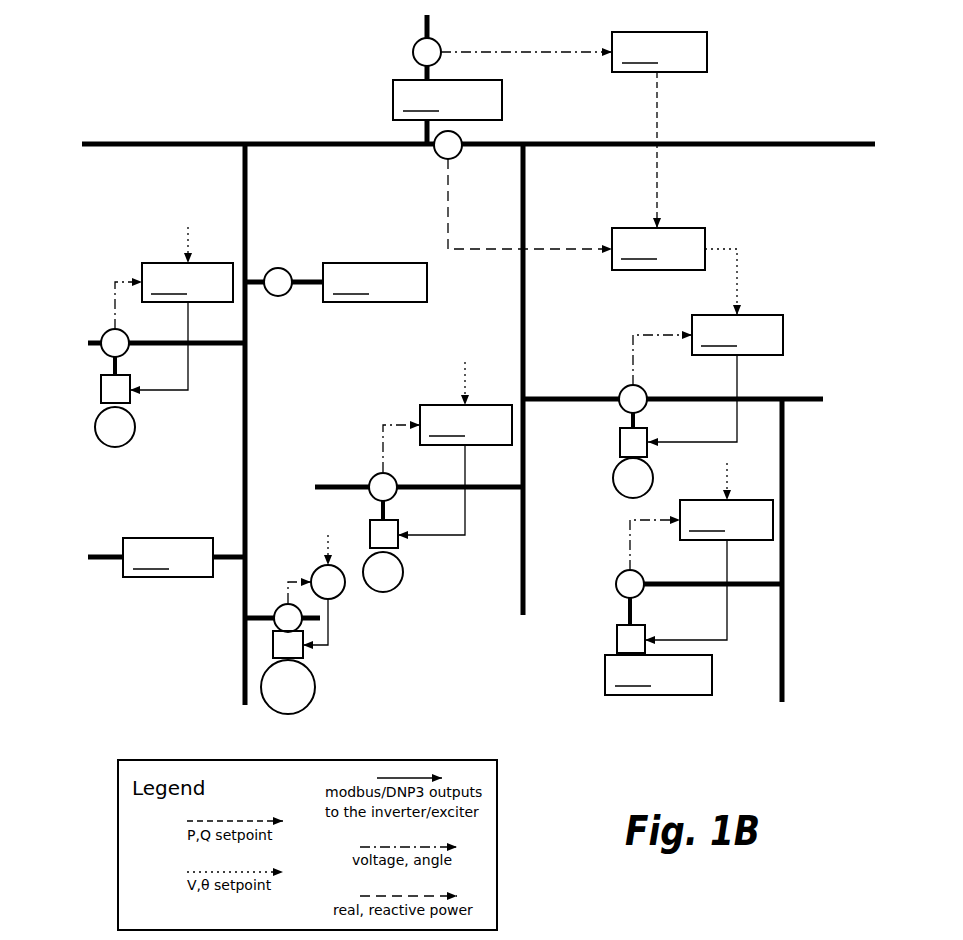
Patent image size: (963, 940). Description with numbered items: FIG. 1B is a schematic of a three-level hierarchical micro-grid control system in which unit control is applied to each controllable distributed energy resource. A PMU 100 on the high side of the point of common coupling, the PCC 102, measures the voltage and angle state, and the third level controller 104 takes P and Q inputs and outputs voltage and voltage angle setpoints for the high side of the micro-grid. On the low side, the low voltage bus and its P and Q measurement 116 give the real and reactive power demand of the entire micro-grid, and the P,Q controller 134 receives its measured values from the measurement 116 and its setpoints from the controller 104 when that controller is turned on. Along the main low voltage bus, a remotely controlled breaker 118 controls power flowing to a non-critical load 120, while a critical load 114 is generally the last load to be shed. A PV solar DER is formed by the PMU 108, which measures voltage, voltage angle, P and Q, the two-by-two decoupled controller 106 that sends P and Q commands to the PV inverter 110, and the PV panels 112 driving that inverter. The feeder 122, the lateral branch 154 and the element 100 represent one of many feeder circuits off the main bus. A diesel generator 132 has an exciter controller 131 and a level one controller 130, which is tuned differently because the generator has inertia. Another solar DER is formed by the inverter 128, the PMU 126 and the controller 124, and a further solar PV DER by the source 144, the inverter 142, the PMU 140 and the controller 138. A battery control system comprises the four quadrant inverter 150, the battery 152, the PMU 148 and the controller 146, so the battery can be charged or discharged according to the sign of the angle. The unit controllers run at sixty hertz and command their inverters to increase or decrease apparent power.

The PMU 100 is at (413, 47).
The point of common coupling (PCC) 102 is at (447, 100).
The third level controller 104 is at (659, 130).
The voltage and voltage angle decoupled controller 106 is at (174, 308).
The PMU 108 is at (102, 335).
The PV inverter 110 is at (101, 390).
The PV panels 112 is at (96, 420).
The critical load 114 is at (166, 557).
The low voltage bus measurement 116 is at (366, 160).
The remotely controlled breaker 118 is at (286, 270).
The non-critical load 120 is at (375, 282).
The feeder circuit 122 is at (522, 300).
The unit controller 124 is at (447, 448).
The PMU 126 is at (371, 480).
The inverter 128 is at (369, 531).
The level one controller for diesel generator 130 is at (318, 574).
The exciter controller 131 is at (273, 645).
The diesel generator 132 is at (314, 678).
The P,Q controller 134 is at (674, 271).
The unit controller 138 is at (708, 378).
The PMU 140 is at (621, 392).
The inverter 142 is at (620, 440).
The solar PV source 144 is at (614, 477).
The battery controller 146 is at (701, 551).
The PMU 148 is at (618, 582).
The four quadrant inverter 150 is at (617, 638).
The battery 152 is at (658, 675).
The lateral branch 154 is at (785, 627).